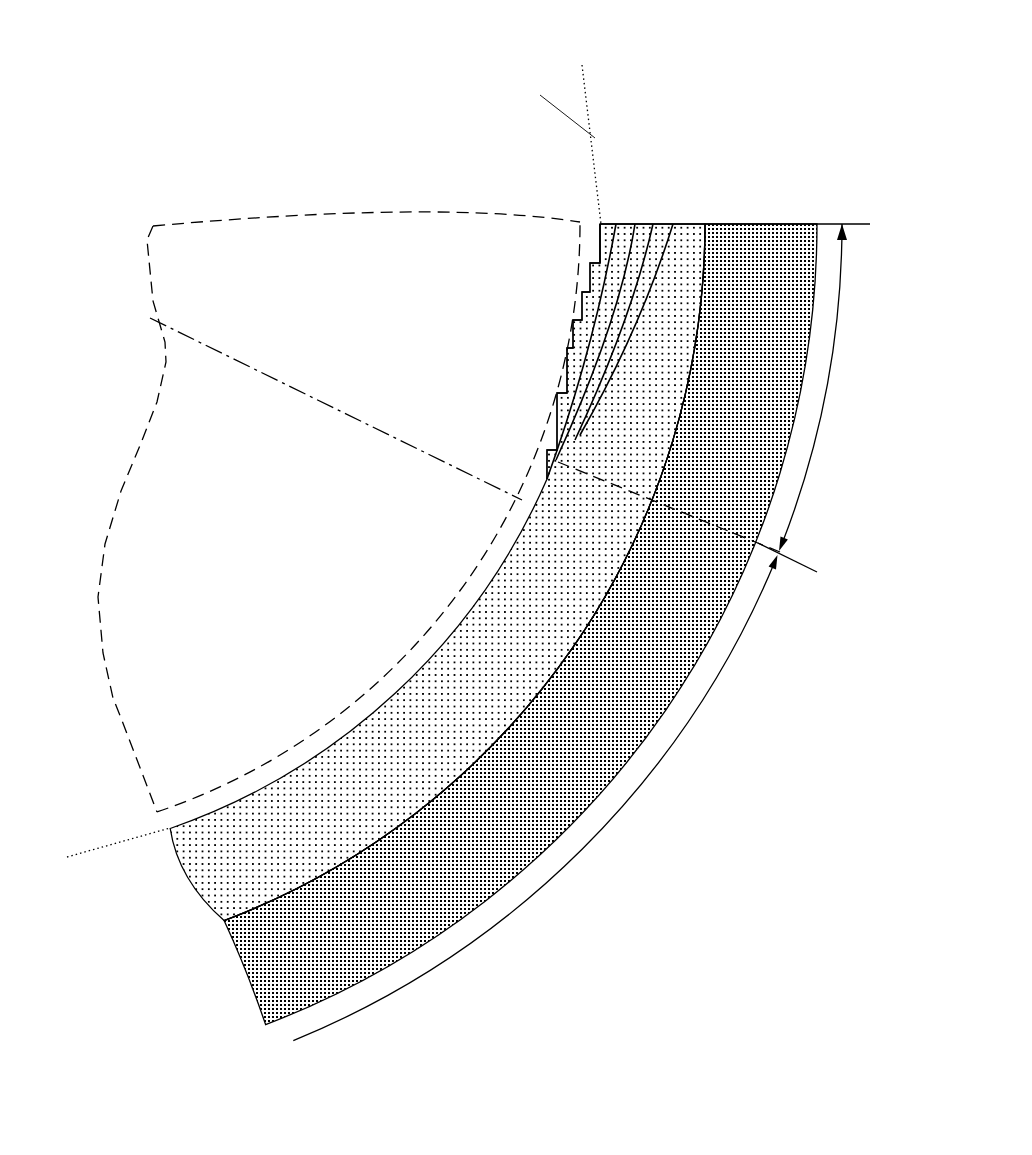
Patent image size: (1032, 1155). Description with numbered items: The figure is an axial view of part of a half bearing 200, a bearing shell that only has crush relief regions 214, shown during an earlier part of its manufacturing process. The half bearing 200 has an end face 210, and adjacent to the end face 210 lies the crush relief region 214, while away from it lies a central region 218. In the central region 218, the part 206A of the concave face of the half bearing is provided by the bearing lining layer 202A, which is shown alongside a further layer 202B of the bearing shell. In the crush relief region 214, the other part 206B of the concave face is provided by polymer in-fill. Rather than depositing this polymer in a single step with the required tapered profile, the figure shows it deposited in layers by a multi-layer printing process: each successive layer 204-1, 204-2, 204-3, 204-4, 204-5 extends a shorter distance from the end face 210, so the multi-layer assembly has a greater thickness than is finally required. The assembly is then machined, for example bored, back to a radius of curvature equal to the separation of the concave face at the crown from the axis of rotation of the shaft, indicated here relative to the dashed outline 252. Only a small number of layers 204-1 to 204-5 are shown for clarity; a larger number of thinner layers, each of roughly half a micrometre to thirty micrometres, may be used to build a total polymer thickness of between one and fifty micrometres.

The half bearing 200 is at (140, 110).
The bearing lining layer 202A is at (683, 248).
The second region of pad layer 202B is at (777, 250).
The first polymer layer 204-1 is at (670, 233).
The second polymer layer 204-2 is at (653, 233).
The third polymer layer 204-3 is at (635, 233).
The fourth polymer layer 204-4 is at (618, 230).
The fifth polymer layer 204-5 is at (600, 223).
The part of the concave face 206A is at (310, 752).
The part of the concave face 206B is at (590, 272).
The end face 210 is at (744, 214).
The crush relief region 214 is at (822, 421).
The central region 218 is at (587, 845).
The substrate 252 is at (238, 514).